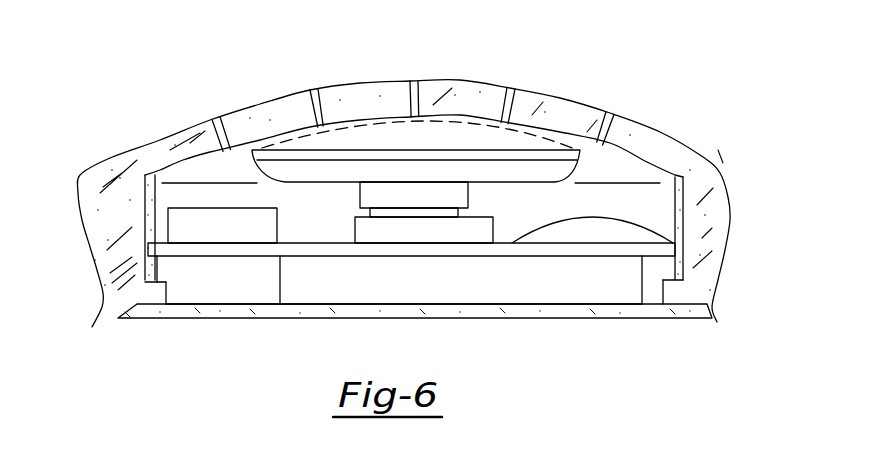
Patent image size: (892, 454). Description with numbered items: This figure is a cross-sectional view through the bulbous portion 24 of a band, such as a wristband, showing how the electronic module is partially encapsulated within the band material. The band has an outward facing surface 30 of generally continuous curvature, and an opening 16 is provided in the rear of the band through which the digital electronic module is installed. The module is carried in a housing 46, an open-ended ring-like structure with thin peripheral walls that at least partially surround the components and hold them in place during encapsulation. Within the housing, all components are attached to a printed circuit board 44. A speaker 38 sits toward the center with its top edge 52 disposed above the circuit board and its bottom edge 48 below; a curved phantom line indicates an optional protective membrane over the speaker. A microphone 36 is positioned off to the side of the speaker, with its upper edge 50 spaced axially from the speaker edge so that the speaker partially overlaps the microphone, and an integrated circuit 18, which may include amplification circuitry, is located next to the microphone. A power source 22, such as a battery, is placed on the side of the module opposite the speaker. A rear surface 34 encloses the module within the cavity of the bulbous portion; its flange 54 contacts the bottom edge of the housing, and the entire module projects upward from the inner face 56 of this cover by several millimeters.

The opening 16 is at (296, 327).
The integrated circuit 18 is at (608, 227).
The power source 22 is at (578, 292).
The bulbous portion 24 is at (496, 67).
The outward facing surface 30 is at (302, 90).
The rear surface 34 is at (560, 314).
The microphone 36 is at (202, 222).
The speaker 38 is at (514, 174).
The printed circuit board 44 is at (673, 248).
The housing 46 is at (145, 193).
The bottom edge 48 is at (333, 183).
The upper edge 50 is at (214, 214).
The top edge 52 is at (438, 140).
The flange 54 is at (156, 290).
The inner face 56 is at (232, 298).